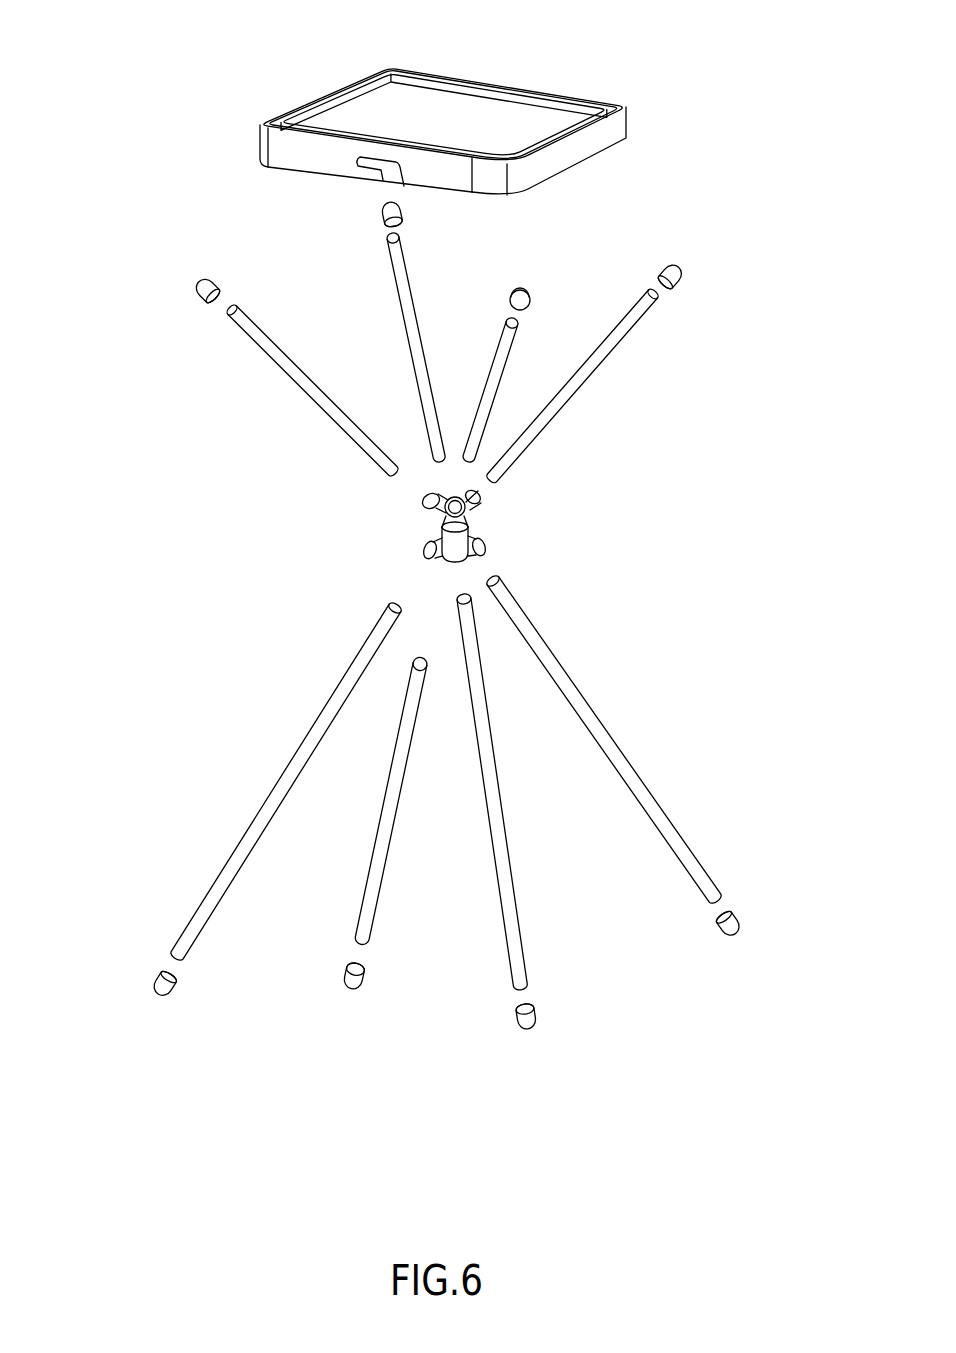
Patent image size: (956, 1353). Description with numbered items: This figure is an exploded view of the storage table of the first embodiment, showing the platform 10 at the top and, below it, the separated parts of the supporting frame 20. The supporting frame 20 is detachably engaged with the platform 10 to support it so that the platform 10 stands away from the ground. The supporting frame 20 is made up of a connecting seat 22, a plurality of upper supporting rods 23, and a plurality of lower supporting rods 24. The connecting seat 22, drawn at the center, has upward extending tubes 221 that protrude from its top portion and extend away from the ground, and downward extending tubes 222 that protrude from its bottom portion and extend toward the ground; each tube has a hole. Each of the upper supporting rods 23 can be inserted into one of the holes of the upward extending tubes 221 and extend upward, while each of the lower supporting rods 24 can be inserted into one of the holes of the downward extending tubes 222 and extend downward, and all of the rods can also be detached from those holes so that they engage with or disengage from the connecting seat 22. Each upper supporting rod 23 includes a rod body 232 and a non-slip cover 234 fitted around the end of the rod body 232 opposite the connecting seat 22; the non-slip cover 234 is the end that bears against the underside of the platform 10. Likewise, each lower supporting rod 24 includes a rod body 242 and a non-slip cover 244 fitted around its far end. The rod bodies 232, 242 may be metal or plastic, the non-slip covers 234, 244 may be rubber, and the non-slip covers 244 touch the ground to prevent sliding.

The platform 10 is at (308, 104).
The supporting frame 20 is at (435, 615).
The connecting seat 22 is at (387, 569).
The upward extending tubes 221 is at (472, 505).
The downward extending tubes 222 is at (433, 548).
The upper supporting rods 23 is at (440, 342).
The rod body 232 is at (253, 342).
The non-slip cover 234 is at (200, 298).
The lower supporting rods 24 is at (435, 802).
The rod body 242 is at (230, 873).
The non-slip cover 244 is at (163, 972).